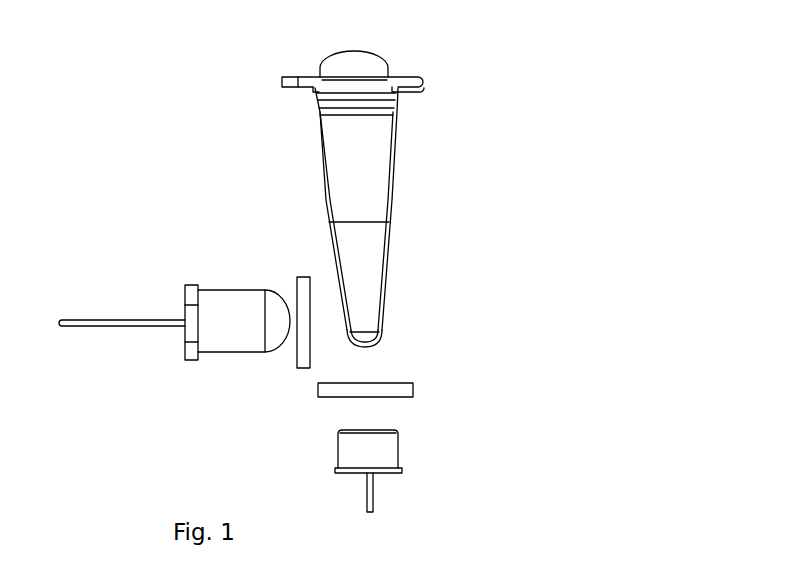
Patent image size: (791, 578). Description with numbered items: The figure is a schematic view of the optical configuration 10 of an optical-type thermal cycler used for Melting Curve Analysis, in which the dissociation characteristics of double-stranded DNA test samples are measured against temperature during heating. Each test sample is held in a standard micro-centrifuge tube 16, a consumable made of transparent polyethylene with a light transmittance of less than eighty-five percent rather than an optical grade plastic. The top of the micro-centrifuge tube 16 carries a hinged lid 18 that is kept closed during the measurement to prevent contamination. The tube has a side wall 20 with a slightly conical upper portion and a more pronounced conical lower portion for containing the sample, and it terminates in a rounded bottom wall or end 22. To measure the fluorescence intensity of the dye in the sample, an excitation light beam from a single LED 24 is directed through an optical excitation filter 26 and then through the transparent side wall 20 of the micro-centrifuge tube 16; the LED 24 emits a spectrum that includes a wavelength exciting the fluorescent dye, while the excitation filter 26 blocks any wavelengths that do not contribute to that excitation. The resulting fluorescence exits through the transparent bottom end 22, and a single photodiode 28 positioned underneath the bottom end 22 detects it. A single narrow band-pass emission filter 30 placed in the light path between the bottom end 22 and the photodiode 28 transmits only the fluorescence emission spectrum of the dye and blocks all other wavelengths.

The optical configuration 10 is at (168, 179).
The micro-centrifuge tube 16 is at (364, 166).
The hinged lid 18 is at (370, 62).
The side wall 20 is at (321, 148).
The rounded bottom wall or end 22 is at (374, 342).
The LED 24 is at (242, 295).
The optical excitation filter 26 is at (298, 277).
The photodiode 28 is at (345, 447).
The narrow band-pass emission filter 30 is at (405, 388).